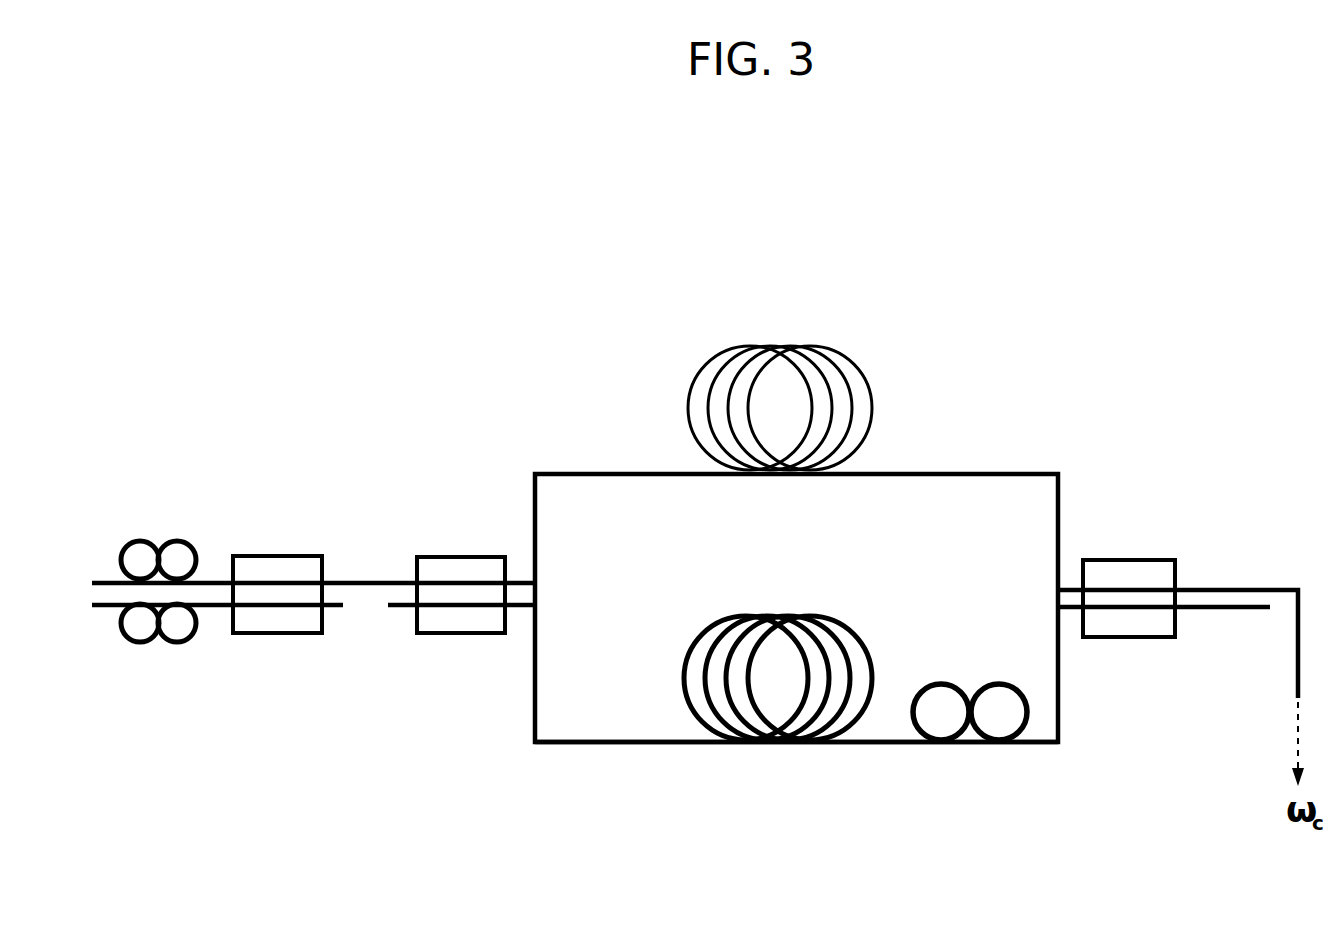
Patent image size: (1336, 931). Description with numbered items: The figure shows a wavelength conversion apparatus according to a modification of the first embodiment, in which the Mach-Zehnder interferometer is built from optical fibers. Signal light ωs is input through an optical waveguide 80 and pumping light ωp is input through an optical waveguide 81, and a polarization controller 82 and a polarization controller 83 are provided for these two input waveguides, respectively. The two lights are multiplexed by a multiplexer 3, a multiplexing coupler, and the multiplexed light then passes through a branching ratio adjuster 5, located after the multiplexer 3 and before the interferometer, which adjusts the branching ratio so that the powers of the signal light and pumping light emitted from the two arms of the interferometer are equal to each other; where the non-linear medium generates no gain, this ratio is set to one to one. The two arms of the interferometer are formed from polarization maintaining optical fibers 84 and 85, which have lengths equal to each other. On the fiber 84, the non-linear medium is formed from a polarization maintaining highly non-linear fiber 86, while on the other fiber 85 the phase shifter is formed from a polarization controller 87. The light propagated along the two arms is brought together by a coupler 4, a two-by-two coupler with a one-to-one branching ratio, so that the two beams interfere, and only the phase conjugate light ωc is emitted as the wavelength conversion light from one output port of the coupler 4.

The optical waveguide 80 is at (101, 577).
The optical waveguide 81 is at (108, 609).
The polarization controller 82 is at (193, 536).
The polarization controller 83 is at (192, 647).
The multiplexer 3 is at (278, 556).
The branching ratio adjuster 5 is at (462, 557).
The polarization maintaining optical fiber 84 is at (562, 473).
The polarization maintaining optical fiber 85 is at (582, 744).
The polarization maintaining highly non-linear fiber 86 is at (868, 383).
The polarization controller 87 is at (1015, 681).
The coupler 4 is at (1131, 560).